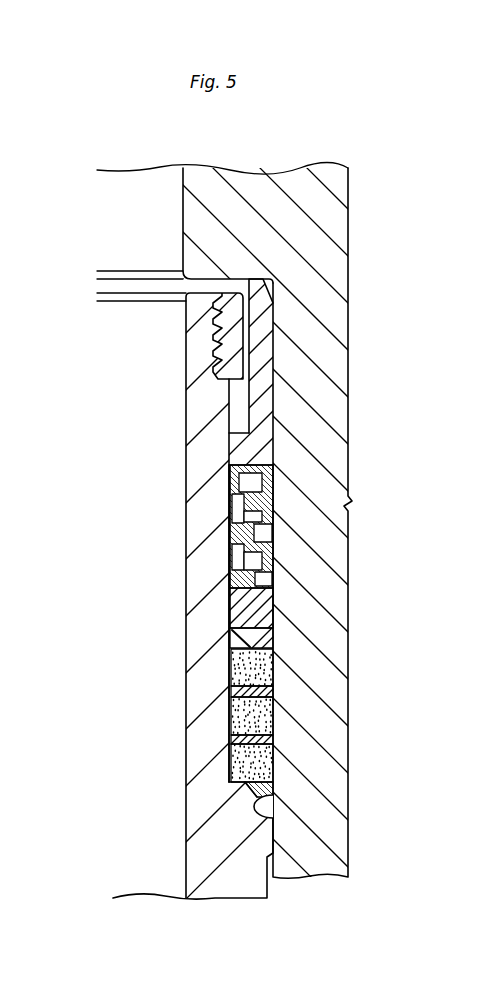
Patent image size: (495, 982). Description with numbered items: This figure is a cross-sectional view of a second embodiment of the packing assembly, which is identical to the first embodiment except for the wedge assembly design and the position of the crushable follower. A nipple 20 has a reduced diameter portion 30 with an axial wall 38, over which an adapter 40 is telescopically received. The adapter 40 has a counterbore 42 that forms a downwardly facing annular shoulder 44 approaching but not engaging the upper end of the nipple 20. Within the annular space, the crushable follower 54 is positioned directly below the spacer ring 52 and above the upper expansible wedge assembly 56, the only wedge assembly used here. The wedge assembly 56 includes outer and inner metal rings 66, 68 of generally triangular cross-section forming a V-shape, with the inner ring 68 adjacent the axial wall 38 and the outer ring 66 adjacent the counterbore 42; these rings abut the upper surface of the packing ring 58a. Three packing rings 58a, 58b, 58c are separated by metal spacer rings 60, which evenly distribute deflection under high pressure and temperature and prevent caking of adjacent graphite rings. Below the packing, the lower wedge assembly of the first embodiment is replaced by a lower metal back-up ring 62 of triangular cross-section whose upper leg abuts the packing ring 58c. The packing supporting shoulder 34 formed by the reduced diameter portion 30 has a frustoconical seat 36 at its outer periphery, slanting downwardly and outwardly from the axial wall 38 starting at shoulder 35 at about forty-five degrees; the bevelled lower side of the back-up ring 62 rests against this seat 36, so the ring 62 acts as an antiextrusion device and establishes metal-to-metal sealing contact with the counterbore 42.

The nipple 20 is at (206, 868).
The reduced diameter portion 30 is at (193, 475).
The packing supporting shoulder 34 is at (240, 778).
The shoulder 35 is at (246, 785).
The frustoconical seat 36 is at (275, 821).
The axial wall 38 is at (238, 601).
The adapter 40 is at (305, 279).
The counterbore 42 is at (265, 433).
The annular shoulder 44 is at (292, 253).
The spacer ring 52 is at (260, 356).
The crushable follower 54 is at (277, 538).
The upper expansible wedge assembly 56 is at (277, 612).
The packing ring 58a is at (258, 667).
The packing ring 58b is at (258, 713).
The packing ring 58c is at (258, 757).
The metal spacer rings 60 is at (231, 737).
The lower metal back-up ring 62 is at (274, 788).
The outer metal ring 66 is at (277, 641).
The inner metal ring 68 is at (235, 645).